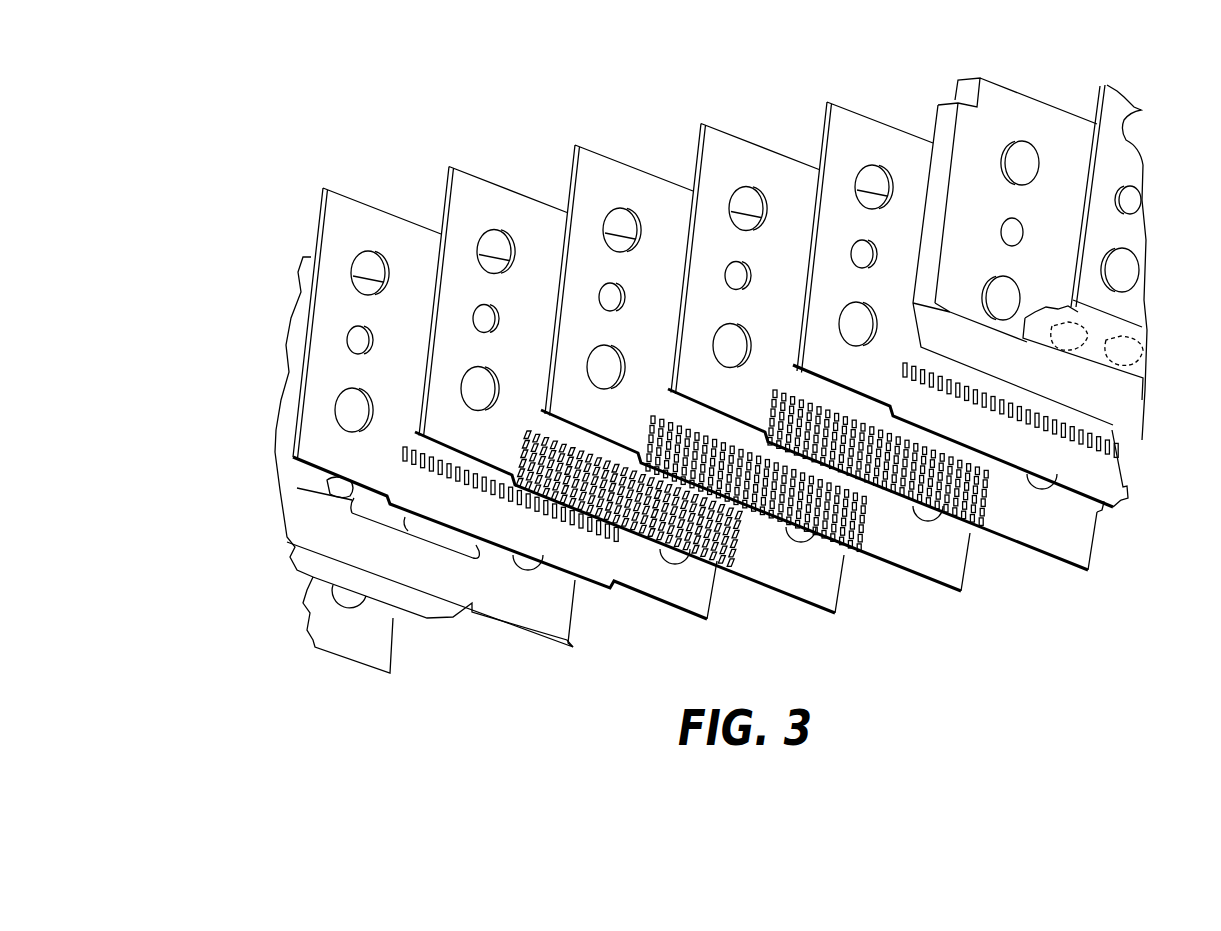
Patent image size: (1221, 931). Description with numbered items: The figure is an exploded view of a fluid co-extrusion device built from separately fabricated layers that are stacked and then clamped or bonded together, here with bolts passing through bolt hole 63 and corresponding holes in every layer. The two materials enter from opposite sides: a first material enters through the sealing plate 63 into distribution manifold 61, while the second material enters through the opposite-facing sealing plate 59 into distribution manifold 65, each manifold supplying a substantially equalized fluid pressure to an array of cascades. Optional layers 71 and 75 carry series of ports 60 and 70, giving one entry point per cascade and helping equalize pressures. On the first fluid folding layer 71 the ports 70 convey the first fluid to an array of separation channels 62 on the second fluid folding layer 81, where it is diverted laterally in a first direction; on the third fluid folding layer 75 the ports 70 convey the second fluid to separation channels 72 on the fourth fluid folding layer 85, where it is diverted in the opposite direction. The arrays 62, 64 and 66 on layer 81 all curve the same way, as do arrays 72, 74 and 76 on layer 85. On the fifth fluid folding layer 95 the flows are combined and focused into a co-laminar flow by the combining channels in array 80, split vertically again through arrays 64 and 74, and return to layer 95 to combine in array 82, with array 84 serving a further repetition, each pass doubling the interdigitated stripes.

The sealing plate 59 is at (378, 635).
The ports 60 is at (1125, 452).
The distribution manifold 61 is at (1130, 413).
The array of separation channels 62 is at (1030, 495).
The bolt hole 63 is at (1038, 172).
The array of separation channels 64 is at (1000, 485).
The distribution manifold 65 is at (1123, 107).
The array of separation channels 66 is at (985, 480).
The ports 70 is at (402, 455).
The first fluid folding layer 71 is at (1110, 502).
The array of separation channels 72 is at (733, 517).
The array of separation channels 74 is at (728, 530).
The third fluid folding layer 75 is at (615, 590).
The array of separation channels 76 is at (728, 548).
The array of combining channels 80 is at (902, 530).
The second fluid folding layer 81 is at (1088, 515).
The array of combining channels 82 is at (865, 505).
The array 84 is at (860, 540).
The fourth fluid folding layer 85 is at (822, 570).
The fifth fluid folding layer 95 is at (965, 550).